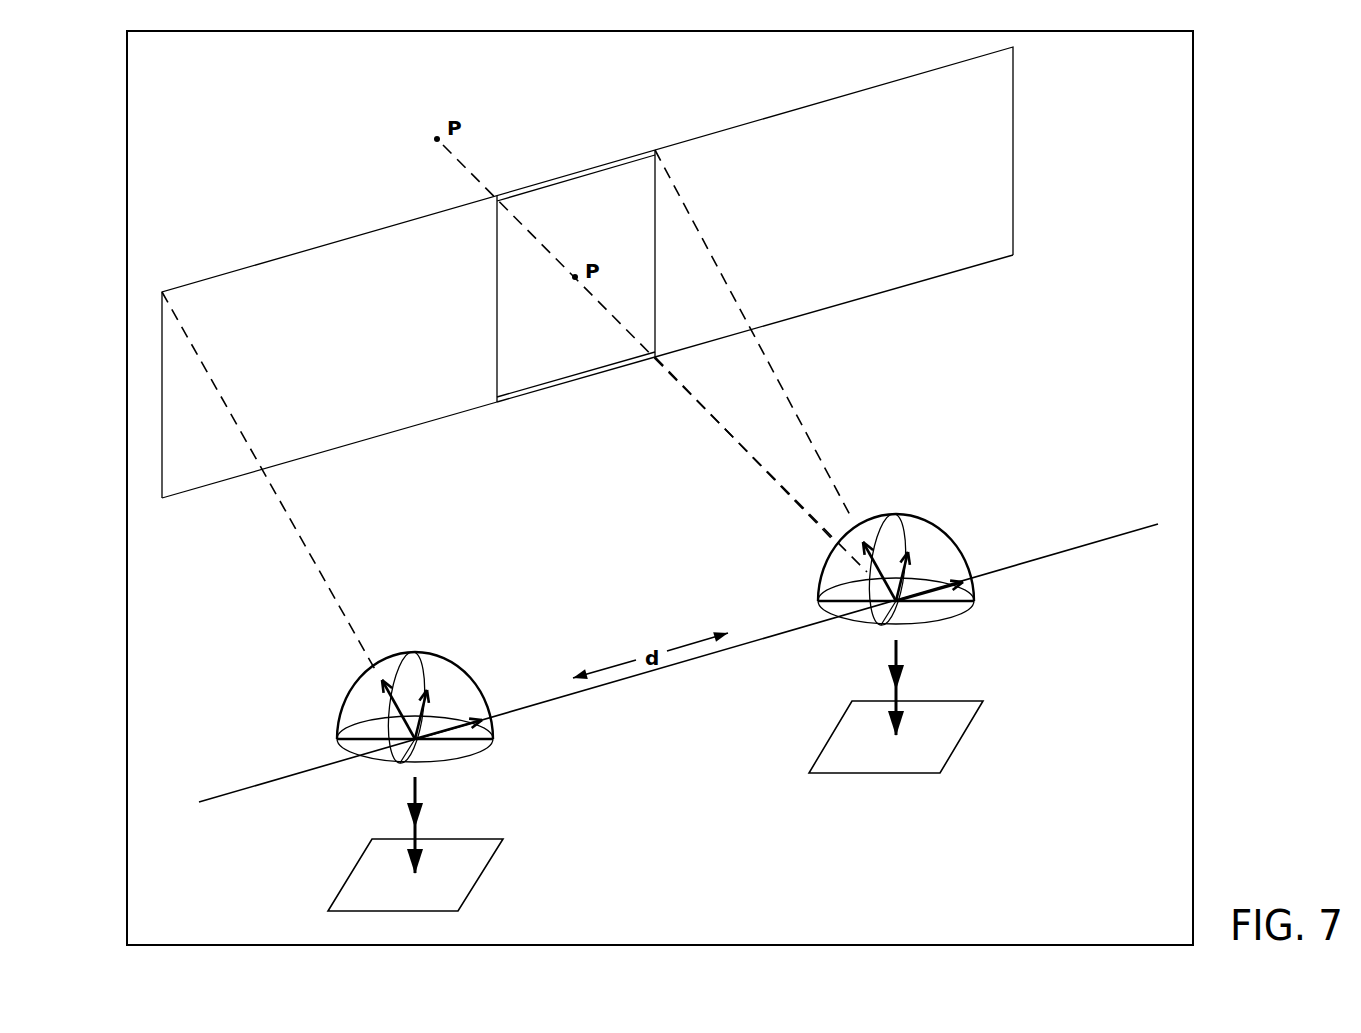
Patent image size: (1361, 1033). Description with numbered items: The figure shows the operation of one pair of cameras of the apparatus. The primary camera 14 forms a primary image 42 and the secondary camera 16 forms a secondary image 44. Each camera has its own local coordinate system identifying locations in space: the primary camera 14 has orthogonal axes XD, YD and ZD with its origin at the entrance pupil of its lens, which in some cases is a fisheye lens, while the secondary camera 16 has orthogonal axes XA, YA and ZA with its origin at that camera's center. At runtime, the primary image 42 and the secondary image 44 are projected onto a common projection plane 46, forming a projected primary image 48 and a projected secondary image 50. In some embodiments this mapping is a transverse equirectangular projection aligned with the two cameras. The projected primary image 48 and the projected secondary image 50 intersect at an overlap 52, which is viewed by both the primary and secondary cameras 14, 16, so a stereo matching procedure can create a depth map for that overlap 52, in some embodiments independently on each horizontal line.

The primary camera 14 is at (817, 591).
The secondary camera 16 is at (336, 729).
The primary image 42 is at (841, 774).
The secondary image 44 is at (361, 912).
The common projection plane 46 is at (389, 210).
The projected primary image 48 is at (373, 436).
The projected secondary image 50 is at (848, 303).
The overlap 52 is at (573, 352).